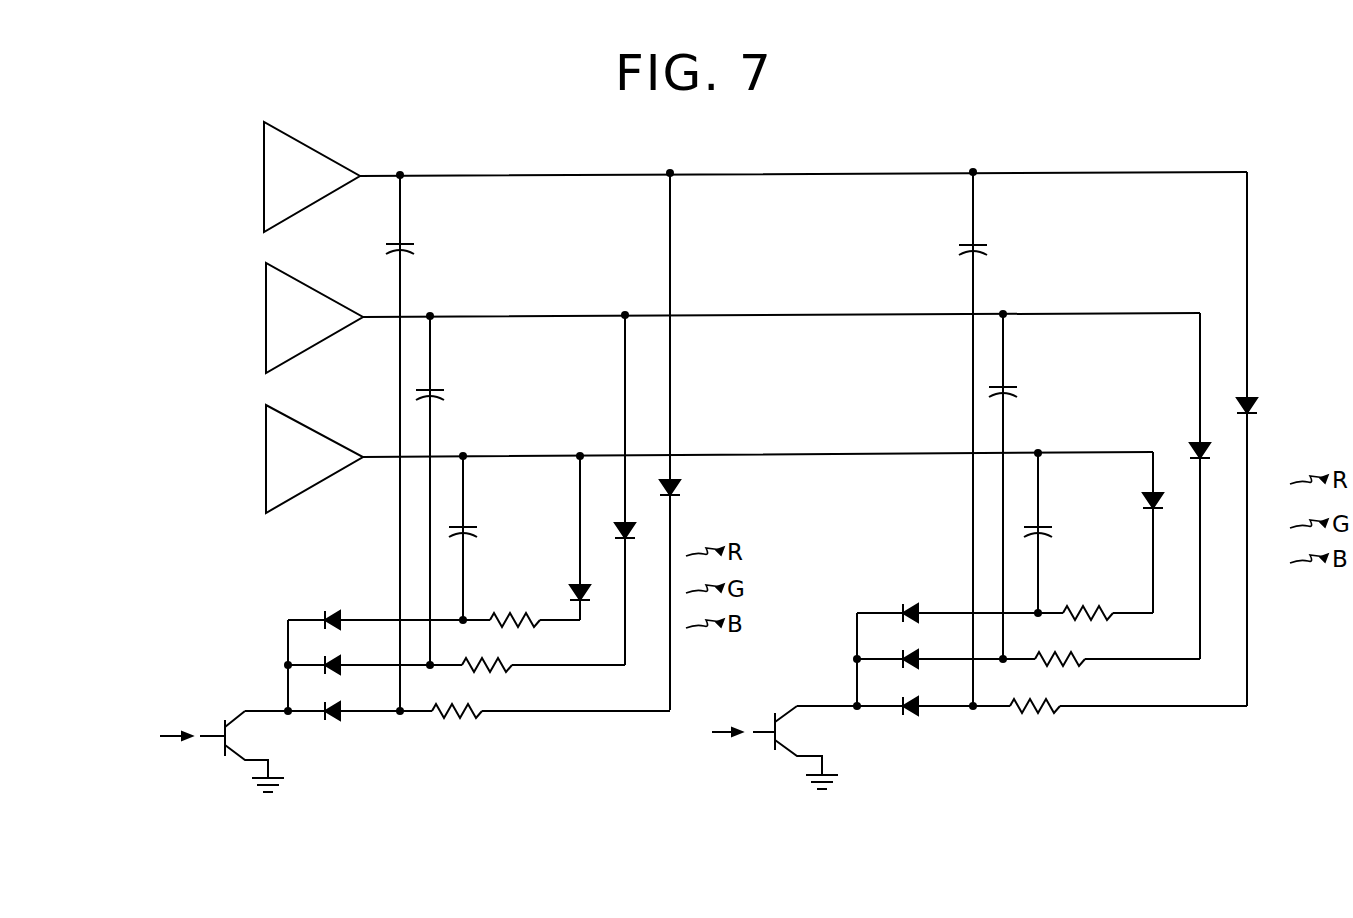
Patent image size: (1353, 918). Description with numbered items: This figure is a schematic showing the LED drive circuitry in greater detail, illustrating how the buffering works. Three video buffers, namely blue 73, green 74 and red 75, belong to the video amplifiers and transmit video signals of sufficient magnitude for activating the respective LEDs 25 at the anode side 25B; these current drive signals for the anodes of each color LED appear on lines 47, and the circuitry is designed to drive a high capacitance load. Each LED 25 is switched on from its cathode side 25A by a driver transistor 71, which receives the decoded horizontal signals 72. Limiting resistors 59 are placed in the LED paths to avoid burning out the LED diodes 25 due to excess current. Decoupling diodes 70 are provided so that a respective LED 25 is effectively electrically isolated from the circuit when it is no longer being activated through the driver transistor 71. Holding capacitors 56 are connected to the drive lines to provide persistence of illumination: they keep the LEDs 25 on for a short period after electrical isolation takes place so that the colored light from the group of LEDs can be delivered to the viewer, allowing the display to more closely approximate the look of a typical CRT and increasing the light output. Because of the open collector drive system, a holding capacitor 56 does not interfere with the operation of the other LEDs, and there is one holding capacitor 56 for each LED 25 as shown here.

The red video buffer 75 is at (264, 168).
The green video buffer 74 is at (266, 300).
The blue video buffer 73 is at (266, 453).
The holding capacitor 56 is at (411, 244).
The line 47 is at (628, 344).
The LED 25 is at (578, 598).
The cathode side 25A is at (583, 604).
The anode side 25B is at (586, 597).
The limiting resistor 59 is at (493, 661).
The decoupling diode 70 is at (323, 613).
The driver transistor 71 is at (224, 718).
The decoded horizontal signal 72 is at (170, 737).